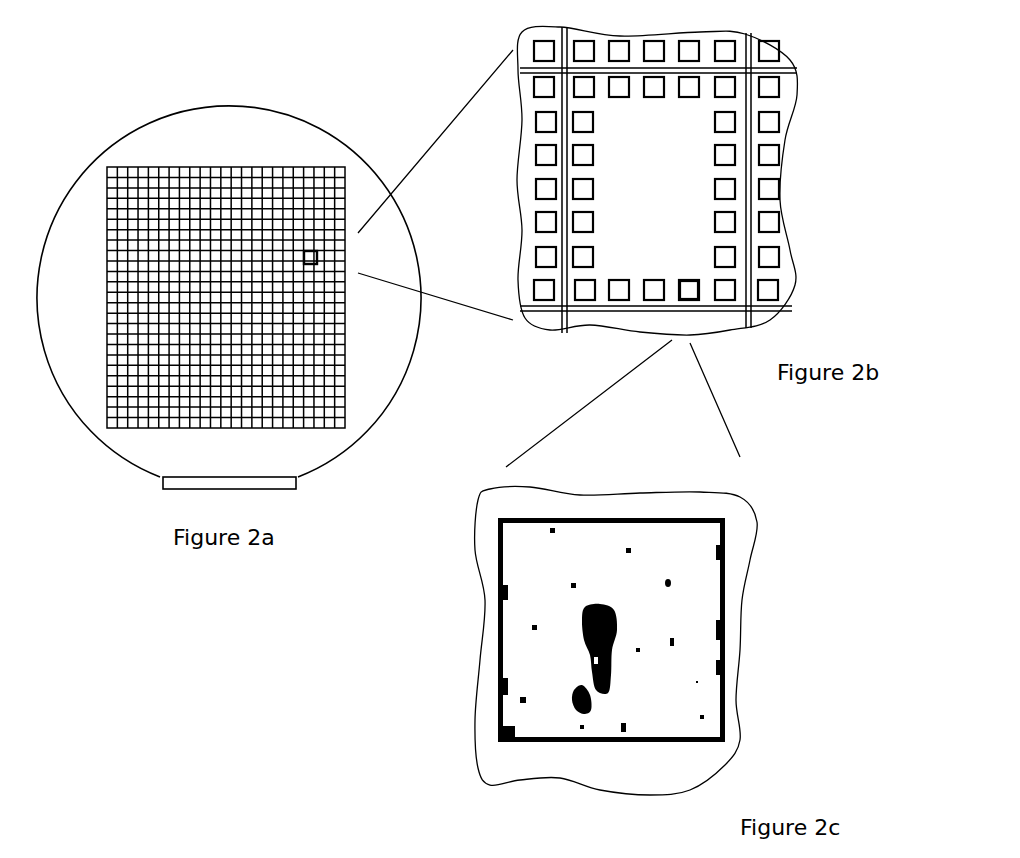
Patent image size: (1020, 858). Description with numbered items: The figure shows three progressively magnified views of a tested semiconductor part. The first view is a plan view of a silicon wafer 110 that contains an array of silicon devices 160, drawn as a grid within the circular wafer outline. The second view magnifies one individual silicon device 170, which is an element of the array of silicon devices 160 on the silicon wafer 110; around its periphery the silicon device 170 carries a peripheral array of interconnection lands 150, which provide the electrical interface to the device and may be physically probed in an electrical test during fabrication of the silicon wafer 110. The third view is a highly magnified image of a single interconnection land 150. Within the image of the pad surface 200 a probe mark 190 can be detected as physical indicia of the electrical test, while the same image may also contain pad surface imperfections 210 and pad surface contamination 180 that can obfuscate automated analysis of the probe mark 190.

In FIG. 2A, the silicon wafer 110 is at (230, 106).
In FIG. 2A, the array of silicon devices 160 is at (288, 167).
In FIG. 2A, the silicon device 170 is at (318, 253).
In FIG. 2B, the silicon device 170 is at (727, 72).
In FIG. 2B, the interconnection land 150 is at (698, 288).
In FIG. 2C, the interconnection land 150 is at (645, 518).
In FIG. 2C, the pad surface contamination 180 is at (575, 700).
In FIG. 2C, the probe mark 190 is at (615, 614).
In FIG. 2C, the pad surface 200 is at (690, 669).
In FIG. 2C, the pad surface imperfections 210 is at (628, 550).